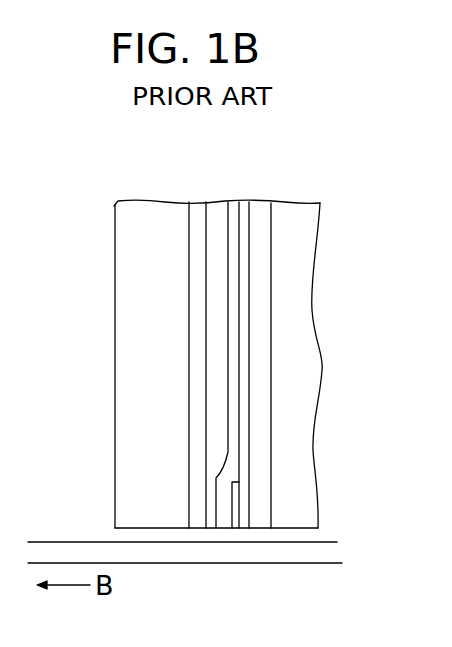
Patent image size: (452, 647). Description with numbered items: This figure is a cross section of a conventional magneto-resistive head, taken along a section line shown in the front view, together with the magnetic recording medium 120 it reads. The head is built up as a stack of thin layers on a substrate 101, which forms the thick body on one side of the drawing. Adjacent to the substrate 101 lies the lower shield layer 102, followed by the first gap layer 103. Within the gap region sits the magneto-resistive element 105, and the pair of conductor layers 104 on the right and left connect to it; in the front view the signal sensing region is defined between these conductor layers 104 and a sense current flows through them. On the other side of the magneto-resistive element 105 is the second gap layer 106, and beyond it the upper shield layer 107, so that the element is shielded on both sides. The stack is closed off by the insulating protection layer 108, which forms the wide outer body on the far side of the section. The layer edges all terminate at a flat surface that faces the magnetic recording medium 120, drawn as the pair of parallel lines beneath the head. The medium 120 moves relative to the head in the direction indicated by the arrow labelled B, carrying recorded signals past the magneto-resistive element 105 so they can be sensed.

The substrate 101 is at (300, 252).
The lower shield layer 102 is at (260, 202).
The first gap layer 103 is at (243, 528).
The conductor layers 104 is at (232, 447).
The magneto-resistive element 105 is at (236, 528).
The second gap layer 106 is at (210, 528).
The upper shield layer 107 is at (197, 202).
The insulating protection layer 108 is at (152, 218).
The magnetic recording medium 120 is at (318, 563).